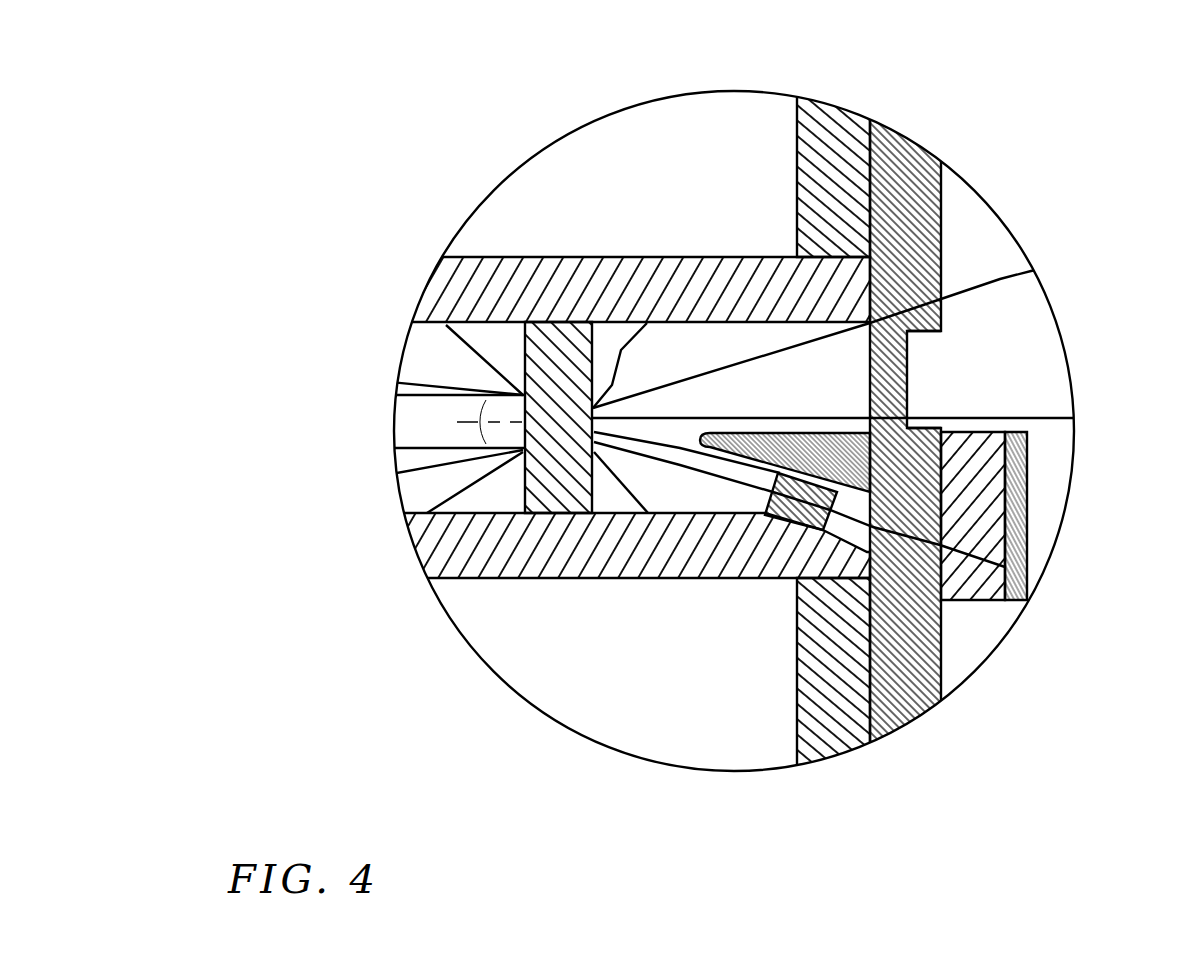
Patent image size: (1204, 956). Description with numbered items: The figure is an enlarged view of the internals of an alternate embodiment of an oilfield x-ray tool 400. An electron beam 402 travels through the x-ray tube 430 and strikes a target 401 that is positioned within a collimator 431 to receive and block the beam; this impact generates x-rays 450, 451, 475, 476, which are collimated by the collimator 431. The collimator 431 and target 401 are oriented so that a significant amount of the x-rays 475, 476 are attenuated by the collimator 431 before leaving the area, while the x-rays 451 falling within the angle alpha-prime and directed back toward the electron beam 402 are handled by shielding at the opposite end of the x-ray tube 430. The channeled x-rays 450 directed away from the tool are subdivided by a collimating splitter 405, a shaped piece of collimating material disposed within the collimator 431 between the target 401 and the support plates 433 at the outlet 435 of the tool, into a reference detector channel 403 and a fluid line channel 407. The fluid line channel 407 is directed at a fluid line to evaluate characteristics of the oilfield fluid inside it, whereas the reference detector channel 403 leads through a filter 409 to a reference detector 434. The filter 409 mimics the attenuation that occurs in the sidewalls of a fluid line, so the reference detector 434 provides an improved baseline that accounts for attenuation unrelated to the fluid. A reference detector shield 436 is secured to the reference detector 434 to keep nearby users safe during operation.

The oilfield x-ray tool 400 is at (562, 189).
The target 401 is at (500, 515).
The electron beam 402 is at (468, 423).
The reference detector channel 403 is at (667, 483).
The collimating splitter 405 is at (748, 452).
The fluid line channel 407 is at (832, 398).
The filter 409 is at (773, 530).
The x-ray tube 430 is at (405, 425).
The collimator 431 is at (577, 568).
The support plates 433 is at (905, 158).
The reference detector 434 is at (985, 590).
The outlet 435 is at (910, 378).
The reference detector shield 436 is at (1022, 563).
The x-rays 450 is at (1000, 278).
The x-rays 451 is at (415, 374).
The x-rays 475 is at (624, 343).
The x-rays 476 is at (440, 337).